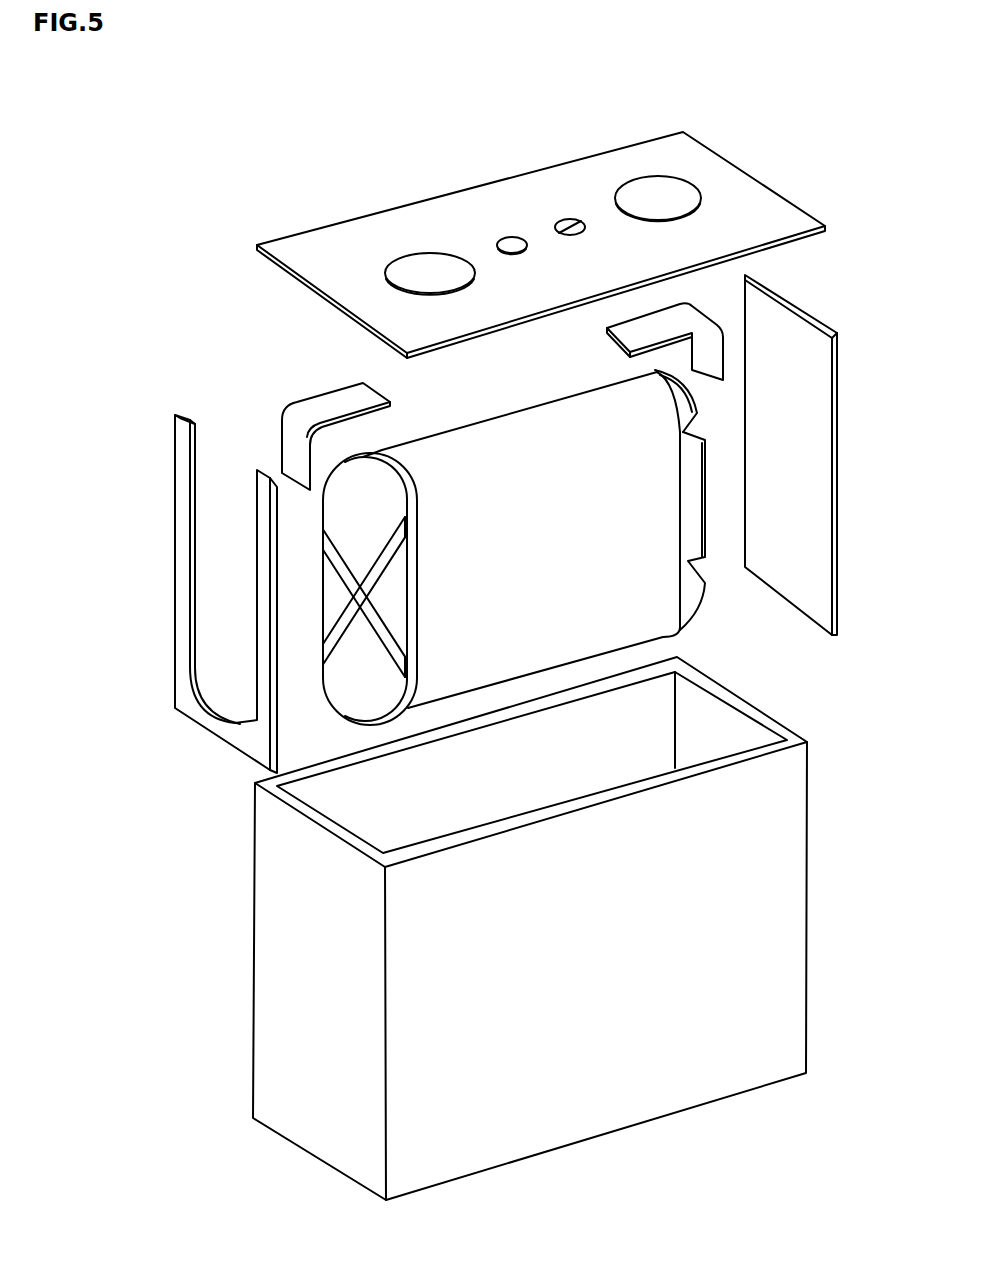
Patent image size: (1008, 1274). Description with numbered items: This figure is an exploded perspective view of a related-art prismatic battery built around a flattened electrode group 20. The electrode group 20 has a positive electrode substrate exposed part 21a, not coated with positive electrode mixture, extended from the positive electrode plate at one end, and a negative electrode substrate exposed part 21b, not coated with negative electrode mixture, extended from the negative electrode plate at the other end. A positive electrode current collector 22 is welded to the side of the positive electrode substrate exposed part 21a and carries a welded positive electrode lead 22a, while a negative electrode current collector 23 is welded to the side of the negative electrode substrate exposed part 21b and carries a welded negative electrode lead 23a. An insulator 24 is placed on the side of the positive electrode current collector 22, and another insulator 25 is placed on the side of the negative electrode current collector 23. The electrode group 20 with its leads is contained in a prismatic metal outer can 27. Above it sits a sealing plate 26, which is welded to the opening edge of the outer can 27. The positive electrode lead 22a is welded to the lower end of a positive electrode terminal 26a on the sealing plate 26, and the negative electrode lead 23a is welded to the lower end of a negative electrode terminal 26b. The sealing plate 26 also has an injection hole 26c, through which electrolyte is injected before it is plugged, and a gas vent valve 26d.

The flattened electrode group 20 is at (520, 392).
The positive electrode substrate exposed part 21a is at (378, 452).
The negative electrode substrate exposed part 21b is at (660, 374).
The positive electrode current collector 22 is at (335, 508).
The positive electrode lead 22a is at (320, 403).
The negative electrode current collector 23 is at (705, 527).
The negative electrode lead 23a is at (663, 327).
The insulator 24 is at (262, 740).
The insulator 25 is at (798, 593).
The sealing plate 26 is at (313, 235).
The positive electrode terminal 26a is at (422, 263).
The negative electrode terminal 26b is at (655, 190).
The injection hole 26c is at (563, 228).
The gas vent valve 26d is at (510, 242).
The prismatic metal outer can 27 is at (783, 900).